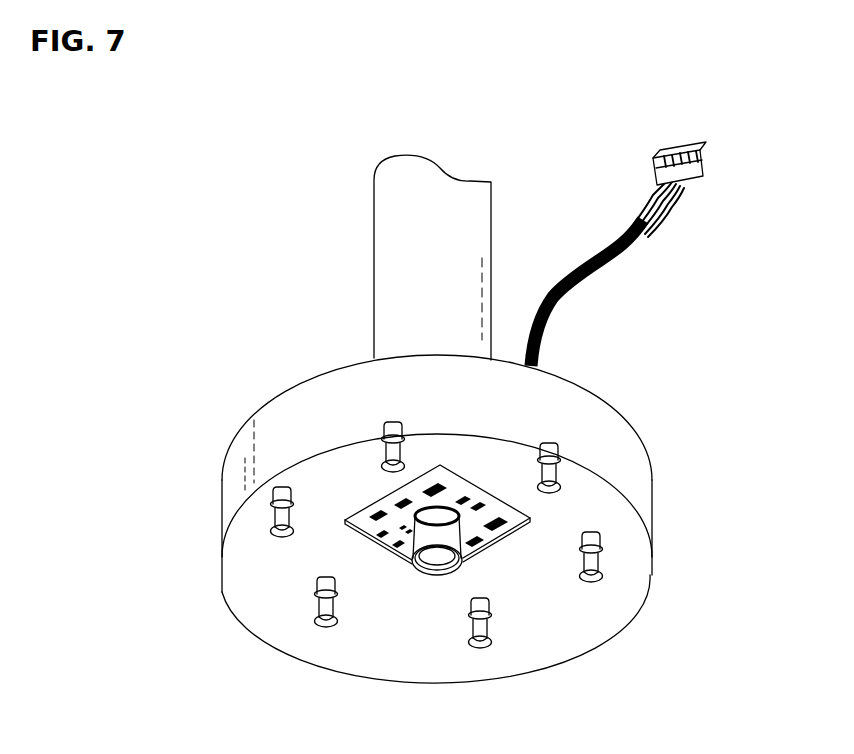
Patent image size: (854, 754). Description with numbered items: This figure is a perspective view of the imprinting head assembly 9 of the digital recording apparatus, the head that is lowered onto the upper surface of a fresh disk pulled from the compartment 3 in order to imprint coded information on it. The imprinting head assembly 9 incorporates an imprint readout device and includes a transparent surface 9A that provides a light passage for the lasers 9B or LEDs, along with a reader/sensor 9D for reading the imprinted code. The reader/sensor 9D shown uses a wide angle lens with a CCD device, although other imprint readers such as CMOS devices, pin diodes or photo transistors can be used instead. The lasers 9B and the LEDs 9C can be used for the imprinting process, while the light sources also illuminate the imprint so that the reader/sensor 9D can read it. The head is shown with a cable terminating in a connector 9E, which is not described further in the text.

The compartment 3 is at (382, 268).
The imprinting head assembly 9 is at (553, 98).
The transparent surface 9A is at (557, 645).
The lasers 9B is at (560, 492).
The LEDs 9C is at (270, 523).
The reader/sensor 9D is at (418, 560).
The connector cable 9E is at (705, 172).